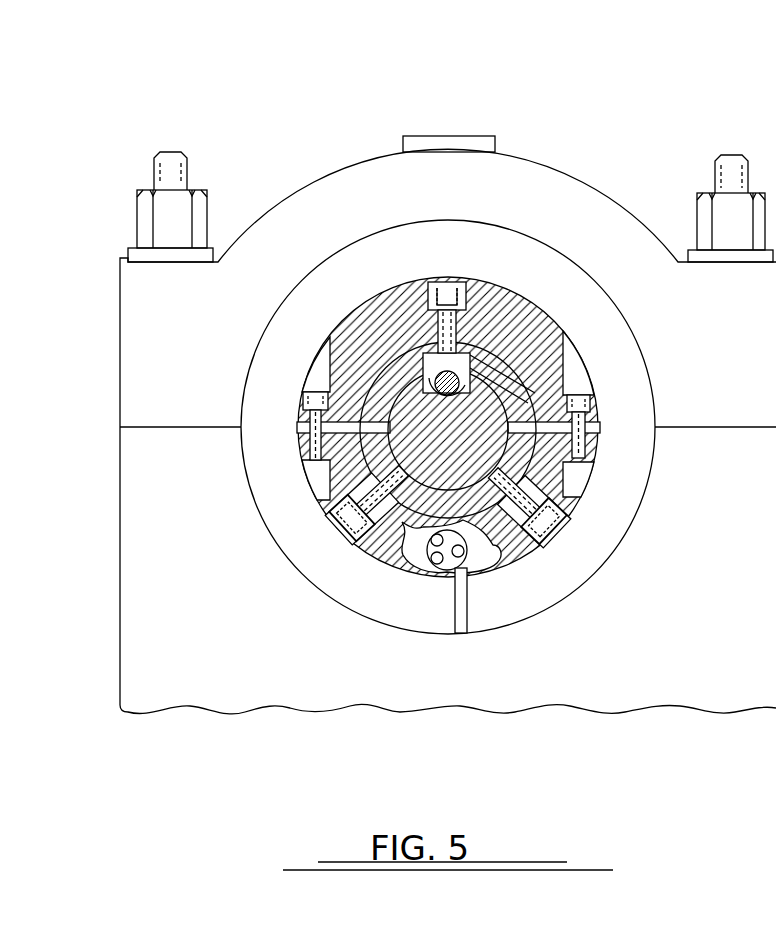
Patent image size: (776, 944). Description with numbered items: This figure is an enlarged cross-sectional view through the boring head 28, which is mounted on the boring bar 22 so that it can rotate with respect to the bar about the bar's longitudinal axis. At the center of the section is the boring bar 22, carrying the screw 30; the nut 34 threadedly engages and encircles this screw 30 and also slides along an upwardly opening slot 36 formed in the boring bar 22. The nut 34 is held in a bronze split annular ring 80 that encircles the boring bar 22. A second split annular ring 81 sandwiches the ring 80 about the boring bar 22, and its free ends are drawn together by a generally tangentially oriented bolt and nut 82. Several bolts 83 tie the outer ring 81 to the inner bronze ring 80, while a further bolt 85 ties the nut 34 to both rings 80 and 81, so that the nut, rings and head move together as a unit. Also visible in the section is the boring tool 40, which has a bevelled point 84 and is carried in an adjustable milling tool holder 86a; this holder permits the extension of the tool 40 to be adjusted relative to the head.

The boring bar 22 is at (365, 400).
The boring head 28 is at (490, 247).
The screw 30 is at (563, 358).
The nut 34 is at (527, 315).
The upwardly opening slot 36 is at (565, 493).
The boring tool 40 is at (455, 598).
The bronze split annular ring 80 is at (478, 352).
The split annular ring 81 is at (530, 340).
The bolt and nut 82 is at (310, 400).
The bolts 83 is at (340, 525).
The bevelled point 84 is at (468, 630).
The bolt 85 is at (447, 282).
The adjustable milling tool holder 86a is at (485, 563).